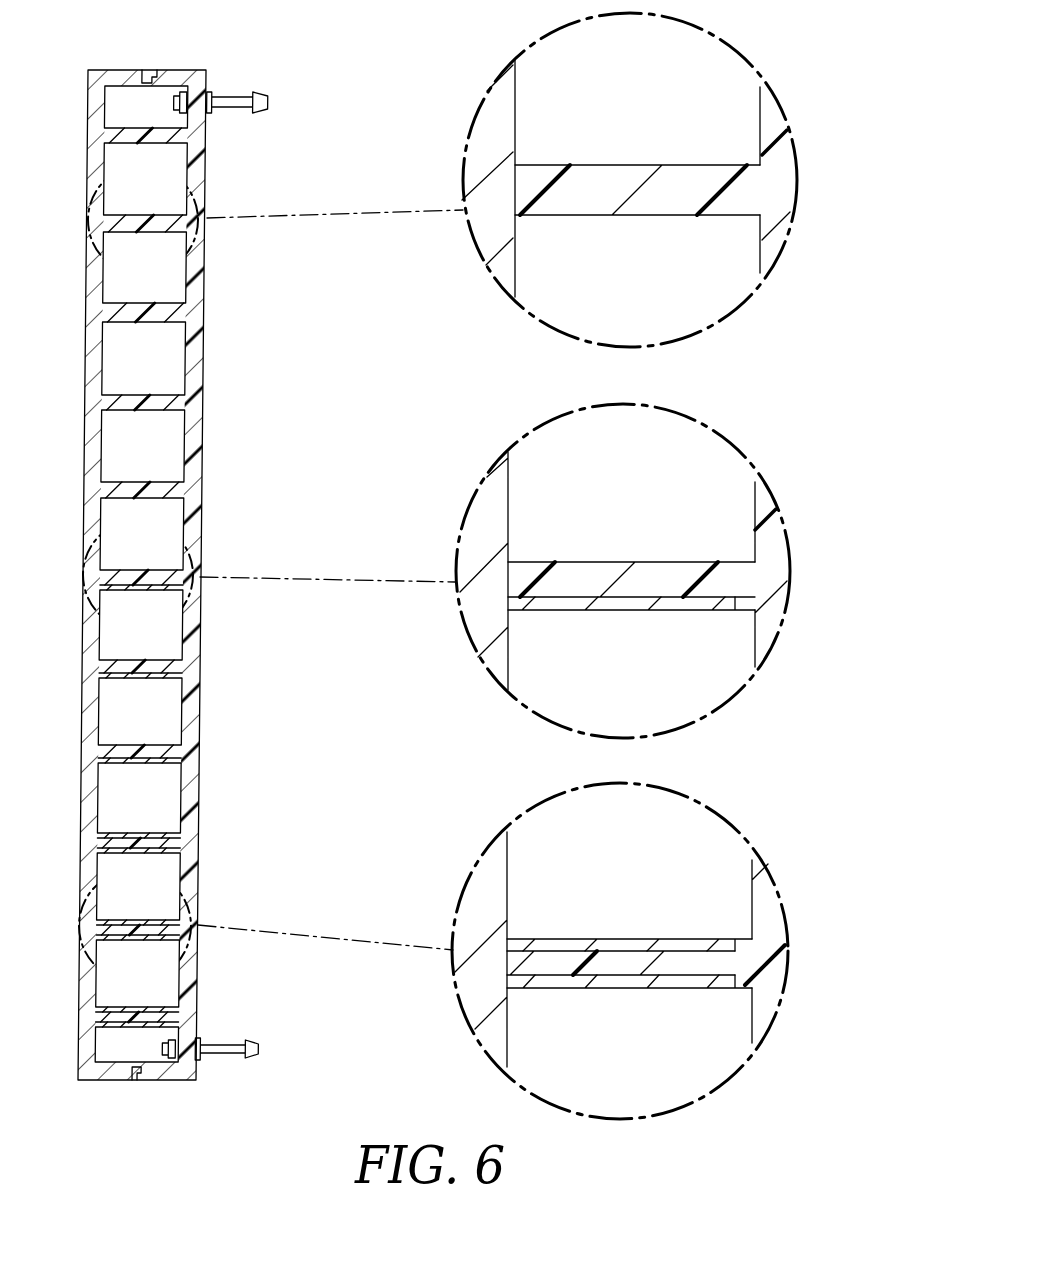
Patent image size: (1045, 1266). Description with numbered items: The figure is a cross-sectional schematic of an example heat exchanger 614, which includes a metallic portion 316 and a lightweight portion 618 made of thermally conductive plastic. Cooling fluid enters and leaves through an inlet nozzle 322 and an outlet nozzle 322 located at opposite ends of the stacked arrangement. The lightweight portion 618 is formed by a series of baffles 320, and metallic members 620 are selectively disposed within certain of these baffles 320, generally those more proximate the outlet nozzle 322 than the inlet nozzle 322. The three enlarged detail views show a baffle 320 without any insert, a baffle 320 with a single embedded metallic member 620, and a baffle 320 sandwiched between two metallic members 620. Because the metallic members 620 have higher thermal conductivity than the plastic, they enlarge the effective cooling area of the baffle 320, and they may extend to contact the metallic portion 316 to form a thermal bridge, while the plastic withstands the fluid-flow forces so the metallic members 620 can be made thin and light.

The heat exchanger 614 is at (330, 32).
The metallic portion 316 is at (122, 69).
The lightweight portion 618 is at (160, 69).
The inlet nozzle and outlet nozzle 322 is at (268, 103).
The baffle 320 is at (620, 155).
The metallic member 620 is at (608, 604).